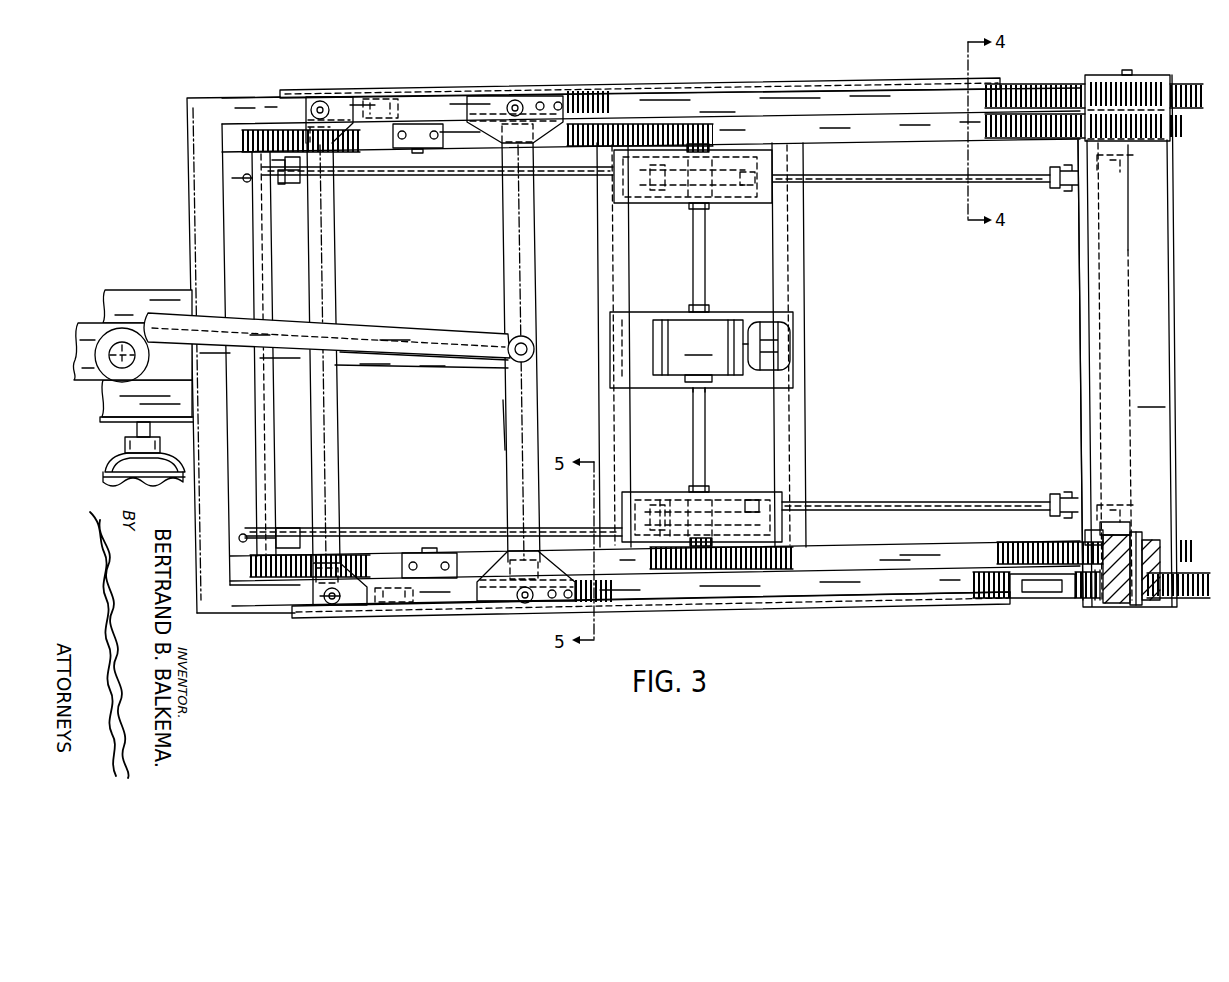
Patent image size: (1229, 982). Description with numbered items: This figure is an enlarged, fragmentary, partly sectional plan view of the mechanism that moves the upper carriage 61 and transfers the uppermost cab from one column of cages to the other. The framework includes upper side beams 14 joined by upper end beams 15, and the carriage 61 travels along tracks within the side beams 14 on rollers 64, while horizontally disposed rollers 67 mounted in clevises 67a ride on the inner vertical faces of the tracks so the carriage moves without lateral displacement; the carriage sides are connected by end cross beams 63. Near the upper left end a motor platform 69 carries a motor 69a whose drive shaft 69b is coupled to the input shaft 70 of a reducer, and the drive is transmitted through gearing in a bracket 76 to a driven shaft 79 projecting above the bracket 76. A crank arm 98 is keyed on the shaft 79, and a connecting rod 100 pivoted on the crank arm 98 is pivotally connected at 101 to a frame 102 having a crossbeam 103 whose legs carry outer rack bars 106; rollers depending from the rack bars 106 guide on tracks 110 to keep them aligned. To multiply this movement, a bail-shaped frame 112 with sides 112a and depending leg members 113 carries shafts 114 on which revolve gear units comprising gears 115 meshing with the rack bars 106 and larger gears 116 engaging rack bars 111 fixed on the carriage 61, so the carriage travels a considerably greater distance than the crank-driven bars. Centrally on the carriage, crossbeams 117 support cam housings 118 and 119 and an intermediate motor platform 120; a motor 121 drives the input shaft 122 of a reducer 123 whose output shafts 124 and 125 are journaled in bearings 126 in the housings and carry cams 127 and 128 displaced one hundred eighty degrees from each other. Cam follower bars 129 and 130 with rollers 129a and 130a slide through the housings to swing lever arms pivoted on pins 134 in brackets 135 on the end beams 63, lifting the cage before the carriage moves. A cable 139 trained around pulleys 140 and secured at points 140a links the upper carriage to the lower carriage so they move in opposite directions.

The upper side beams 14 is at (246, 605).
The upper end beams 15 is at (190, 160).
The carriage 61 is at (808, 267).
The end cross beams 63 is at (270, 243).
The rollers 64 is at (1060, 600).
The horizontally disposed rollers 67 is at (992, 578).
The clevises 67a is at (1018, 600).
The motor platform 69 is at (180, 447).
The motor 69a is at (182, 472).
The drive shaft 69b is at (125, 456).
The input shaft 70 is at (138, 426).
The bracket 76 is at (147, 353).
The driven shaft 79 is at (125, 355).
The crank arm 98 is at (85, 366).
The connecting rod 100 is at (355, 326).
The pivotal connection 101 is at (528, 338).
The frame 102 is at (498, 431).
The crossbeam 103 is at (527, 382).
The outer rack bars 106 is at (1015, 84).
The tracks 110 is at (445, 614).
The rack bars 111 is at (715, 130).
The bail-shaped frame 112 is at (1127, 338).
The sides 112a is at (1098, 602).
The depending leg members 113 is at (1095, 540).
The shafts 114 is at (1122, 605).
The gears 115 is at (1155, 605).
The gears 116 is at (1100, 522).
The crossbeams 117 is at (628, 420).
The cam housing 118 is at (784, 496).
The cam housing 119 is at (775, 163).
The motor platform 120 is at (795, 316).
The motor 121 is at (785, 352).
The input shaft 122 is at (708, 312).
The reducer 123 is at (698, 351).
The output shaft 124 is at (700, 262).
The output shaft 125 is at (705, 420).
The bearings 126 is at (702, 142).
The cam 127 is at (695, 175).
The cam 128 is at (658, 175).
The cam follower bar 129 is at (910, 182).
The roller 129a is at (758, 495).
The cam follower bar 130 is at (452, 176).
The roller 130a is at (665, 500).
The pins 134 is at (293, 187).
The brackets 135 is at (270, 187).
The cable 139 is at (1118, 160).
The pulleys 140 is at (246, 538).
The points 140a is at (250, 189).